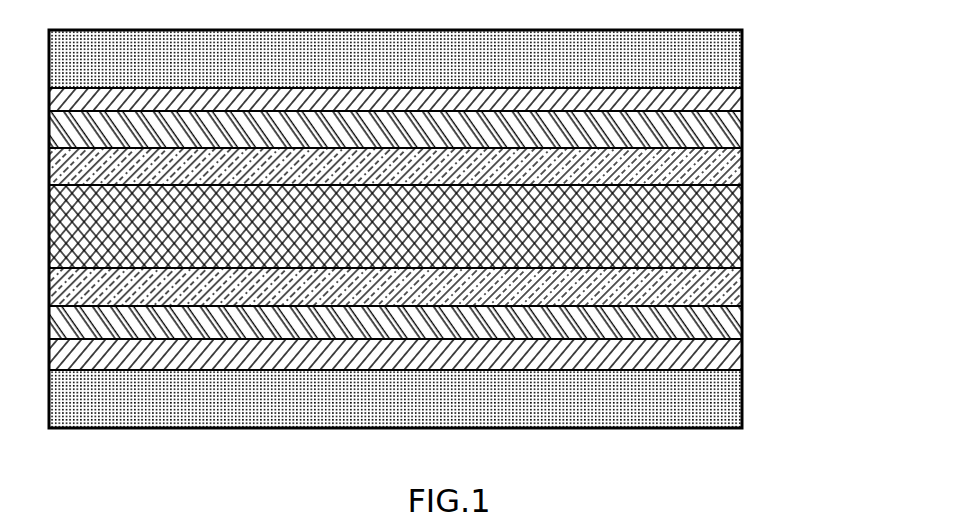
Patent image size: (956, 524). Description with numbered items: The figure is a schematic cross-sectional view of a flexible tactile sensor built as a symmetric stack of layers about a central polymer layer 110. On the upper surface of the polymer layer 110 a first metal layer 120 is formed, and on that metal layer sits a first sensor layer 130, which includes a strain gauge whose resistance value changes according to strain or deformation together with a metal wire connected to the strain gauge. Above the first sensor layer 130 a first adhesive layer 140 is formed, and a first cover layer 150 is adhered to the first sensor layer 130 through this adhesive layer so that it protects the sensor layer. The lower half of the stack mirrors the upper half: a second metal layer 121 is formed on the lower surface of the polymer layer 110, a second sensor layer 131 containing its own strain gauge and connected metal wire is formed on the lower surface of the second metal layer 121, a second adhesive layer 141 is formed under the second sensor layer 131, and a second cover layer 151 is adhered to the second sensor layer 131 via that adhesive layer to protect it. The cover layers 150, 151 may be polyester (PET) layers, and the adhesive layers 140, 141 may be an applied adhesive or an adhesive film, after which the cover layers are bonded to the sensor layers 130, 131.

The polymer layer 110 is at (743, 224).
The first metal layer 120 is at (743, 165).
The second metal layer 121 is at (743, 282).
The first sensor layer 130 is at (743, 129).
The second sensor layer 131 is at (743, 322).
The first adhesive layer 140 is at (743, 97).
The second adhesive layer 141 is at (743, 356).
The first cover layer 150 is at (743, 52).
The second cover layer 151 is at (743, 401).